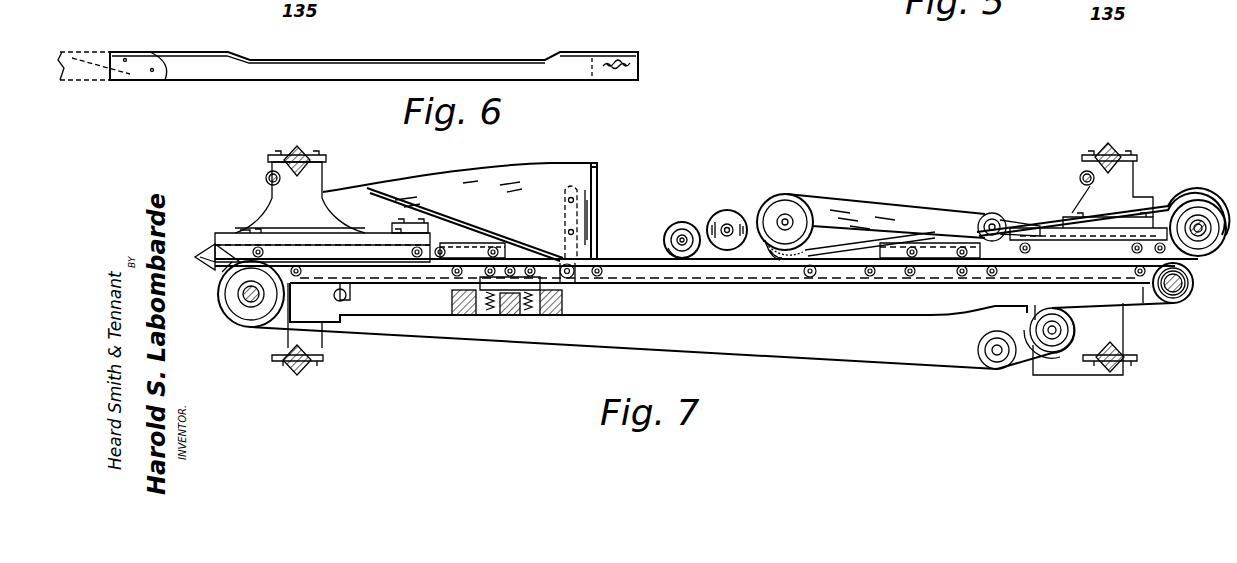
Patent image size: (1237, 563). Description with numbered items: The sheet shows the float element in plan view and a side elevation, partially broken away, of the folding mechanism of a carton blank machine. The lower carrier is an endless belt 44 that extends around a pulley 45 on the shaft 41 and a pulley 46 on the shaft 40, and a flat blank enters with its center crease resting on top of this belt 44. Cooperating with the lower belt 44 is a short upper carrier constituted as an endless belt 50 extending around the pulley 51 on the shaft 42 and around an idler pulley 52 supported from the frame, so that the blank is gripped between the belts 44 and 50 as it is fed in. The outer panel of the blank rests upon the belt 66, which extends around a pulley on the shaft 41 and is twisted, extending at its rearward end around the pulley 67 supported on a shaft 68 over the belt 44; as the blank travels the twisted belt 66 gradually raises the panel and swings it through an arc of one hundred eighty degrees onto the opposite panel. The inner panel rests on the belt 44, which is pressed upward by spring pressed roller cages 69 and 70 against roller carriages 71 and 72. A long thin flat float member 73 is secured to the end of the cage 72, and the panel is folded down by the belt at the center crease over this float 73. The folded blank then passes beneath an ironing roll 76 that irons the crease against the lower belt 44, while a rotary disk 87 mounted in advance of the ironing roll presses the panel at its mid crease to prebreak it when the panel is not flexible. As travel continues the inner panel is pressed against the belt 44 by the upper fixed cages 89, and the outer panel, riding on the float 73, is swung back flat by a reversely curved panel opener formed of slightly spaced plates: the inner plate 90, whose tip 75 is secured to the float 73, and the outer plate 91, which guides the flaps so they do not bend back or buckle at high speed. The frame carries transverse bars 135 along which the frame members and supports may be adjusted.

In FIG. 7, the shaft 40 is at (245, 302).
In FIG. 7, the shaft 41 is at (1188, 290).
In FIG. 7, the shaft 42 is at (1203, 222).
In FIG. 7, the endless belt 44 is at (916, 370).
In FIG. 7, the pulley 45 is at (1173, 298).
In FIG. 7, the pulley 46 is at (252, 321).
In FIG. 7, the endless belt 50 is at (1040, 230).
In FIG. 7, the pulley 51 is at (1196, 226).
In FIG. 7, the idler pulley 52 is at (985, 212).
In FIG. 7, the belt 66 is at (845, 212).
In FIG. 7, the pulley 67 is at (805, 215).
In FIG. 7, the shaft 68 is at (785, 220).
In FIG. 7, the spring pressed roller cage 69 is at (926, 276).
In FIG. 7, the spring pressed roller cage 70 is at (407, 272).
In FIG. 7, the roller carriage 71 is at (1122, 242).
In FIG. 7, the roller carriage 72 is at (936, 250).
In FIG. 6, the float member 73 is at (333, 78).
In FIG. 7, the float member 73 is at (643, 258).
In FIG. 6, the tip of panel opener 75 is at (98, 52).
In FIG. 7, the ironing roll 76 is at (692, 222).
In FIG. 7, the rotary disk 87 is at (736, 212).
In FIG. 7, the upper fixed cage 89 is at (278, 250).
In FIG. 7, the inner plate of panel opener 90 is at (368, 193).
In FIG. 7, the outer plate of panel opener 91 is at (547, 175).
In FIG. 7, the transverse bar 135 is at (293, 153).